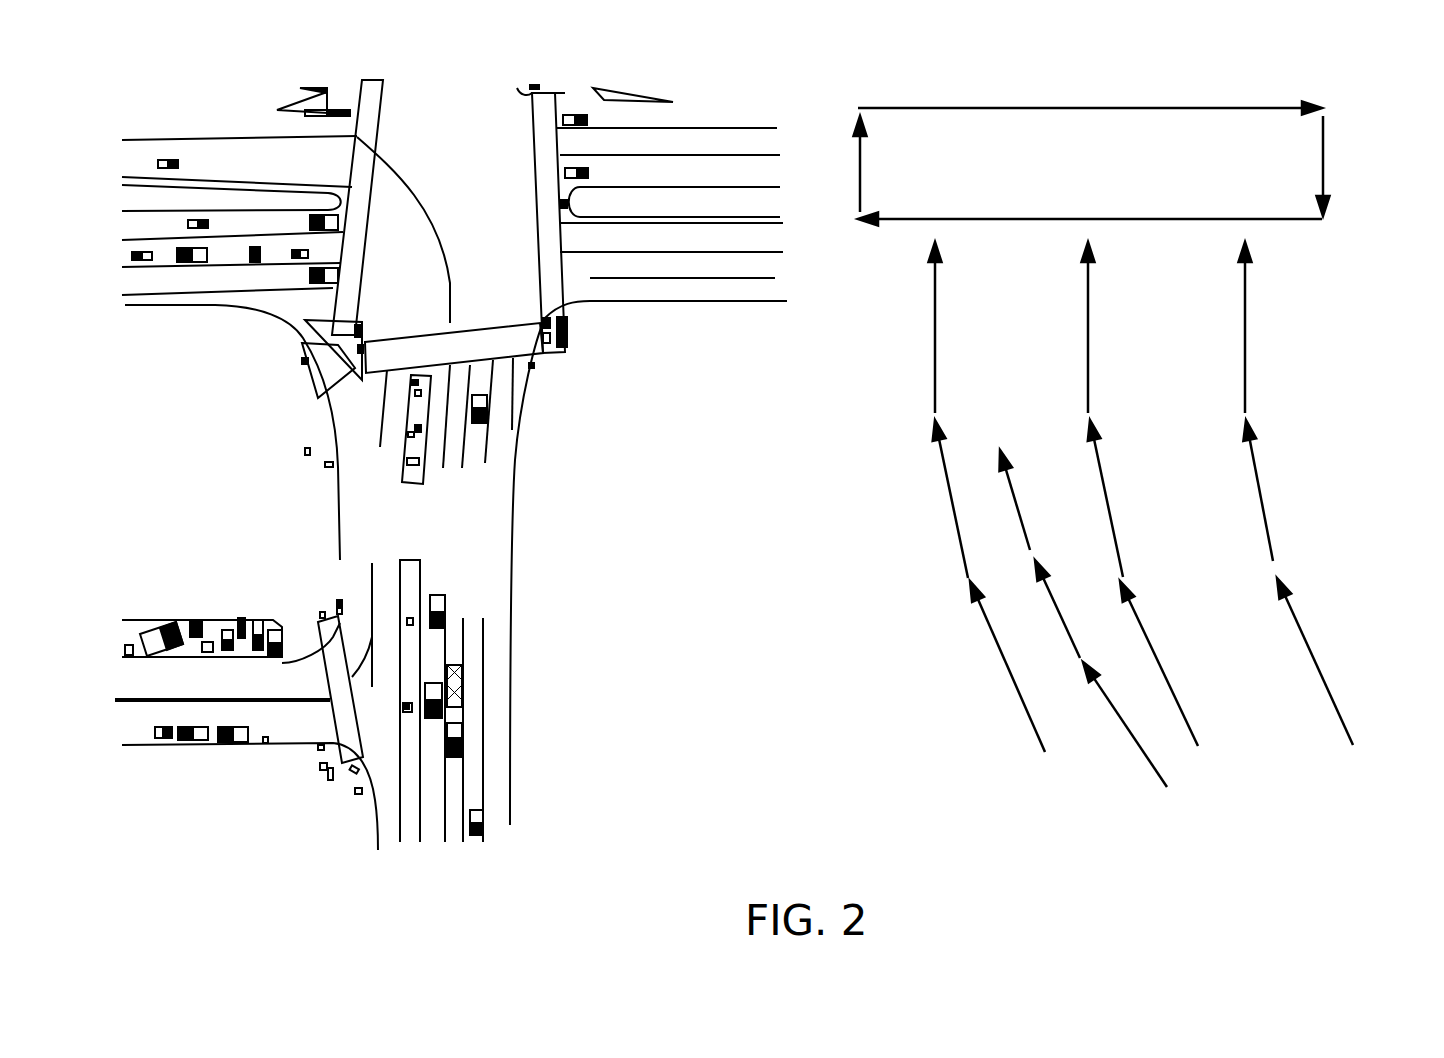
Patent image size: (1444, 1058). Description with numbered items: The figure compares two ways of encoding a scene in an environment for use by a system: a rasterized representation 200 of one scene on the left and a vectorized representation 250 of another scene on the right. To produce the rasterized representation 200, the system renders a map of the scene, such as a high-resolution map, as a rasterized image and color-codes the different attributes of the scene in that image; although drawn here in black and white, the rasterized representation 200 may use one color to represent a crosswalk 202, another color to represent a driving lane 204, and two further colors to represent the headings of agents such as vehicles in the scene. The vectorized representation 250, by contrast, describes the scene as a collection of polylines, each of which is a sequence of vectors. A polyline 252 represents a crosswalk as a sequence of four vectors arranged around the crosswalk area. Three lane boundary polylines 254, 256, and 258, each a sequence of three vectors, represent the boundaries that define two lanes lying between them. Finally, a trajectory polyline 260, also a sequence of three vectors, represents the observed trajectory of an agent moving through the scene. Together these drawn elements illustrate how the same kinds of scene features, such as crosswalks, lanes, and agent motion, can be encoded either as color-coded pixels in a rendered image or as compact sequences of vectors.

The rasterized representation 200 is at (292, 815).
The crosswalk 202 is at (353, 163).
The driving lane 204 is at (372, 597).
The vectorized representation 250 is at (1298, 807).
The polyline 252 is at (1325, 160).
The lane boundary polyline 254 is at (933, 399).
The lane boundary polyline 256 is at (1125, 589).
The lane boundary polyline 258 is at (1260, 477).
The trajectory polyline 260 is at (1133, 733).